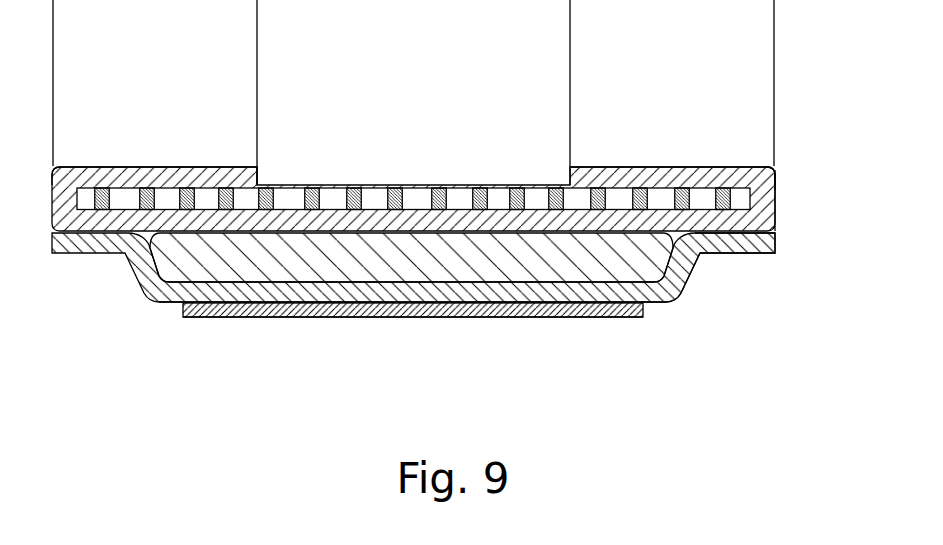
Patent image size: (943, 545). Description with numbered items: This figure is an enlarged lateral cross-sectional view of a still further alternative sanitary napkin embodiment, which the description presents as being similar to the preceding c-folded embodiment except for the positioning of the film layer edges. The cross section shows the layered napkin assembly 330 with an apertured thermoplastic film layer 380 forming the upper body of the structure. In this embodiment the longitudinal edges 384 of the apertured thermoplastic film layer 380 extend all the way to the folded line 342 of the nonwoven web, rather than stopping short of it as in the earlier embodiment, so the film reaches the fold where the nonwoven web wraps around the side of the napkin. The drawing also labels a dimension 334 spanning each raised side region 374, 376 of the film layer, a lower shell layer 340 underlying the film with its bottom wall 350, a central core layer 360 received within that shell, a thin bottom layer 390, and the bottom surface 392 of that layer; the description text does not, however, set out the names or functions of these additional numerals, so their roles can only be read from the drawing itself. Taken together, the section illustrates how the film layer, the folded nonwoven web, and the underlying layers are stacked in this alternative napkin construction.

The electrode assembly 330 is at (784, 153).
The width of raised portion 334 is at (257, 20).
The conductive shell layer 340 is at (232, 227).
The folded line 342 is at (792, 168).
The bottom wall of shell 350 is at (625, 292).
The core layer 360 is at (493, 265).
The left raised portion 374 is at (162, 177).
The right raised portion 376 is at (662, 165).
The apertured thermoplastic film layer 380 is at (420, 185).
The longitudinal edges 384 is at (740, 253).
The adhesive layer 390 is at (422, 317).
The bottom surface 392 is at (313, 318).